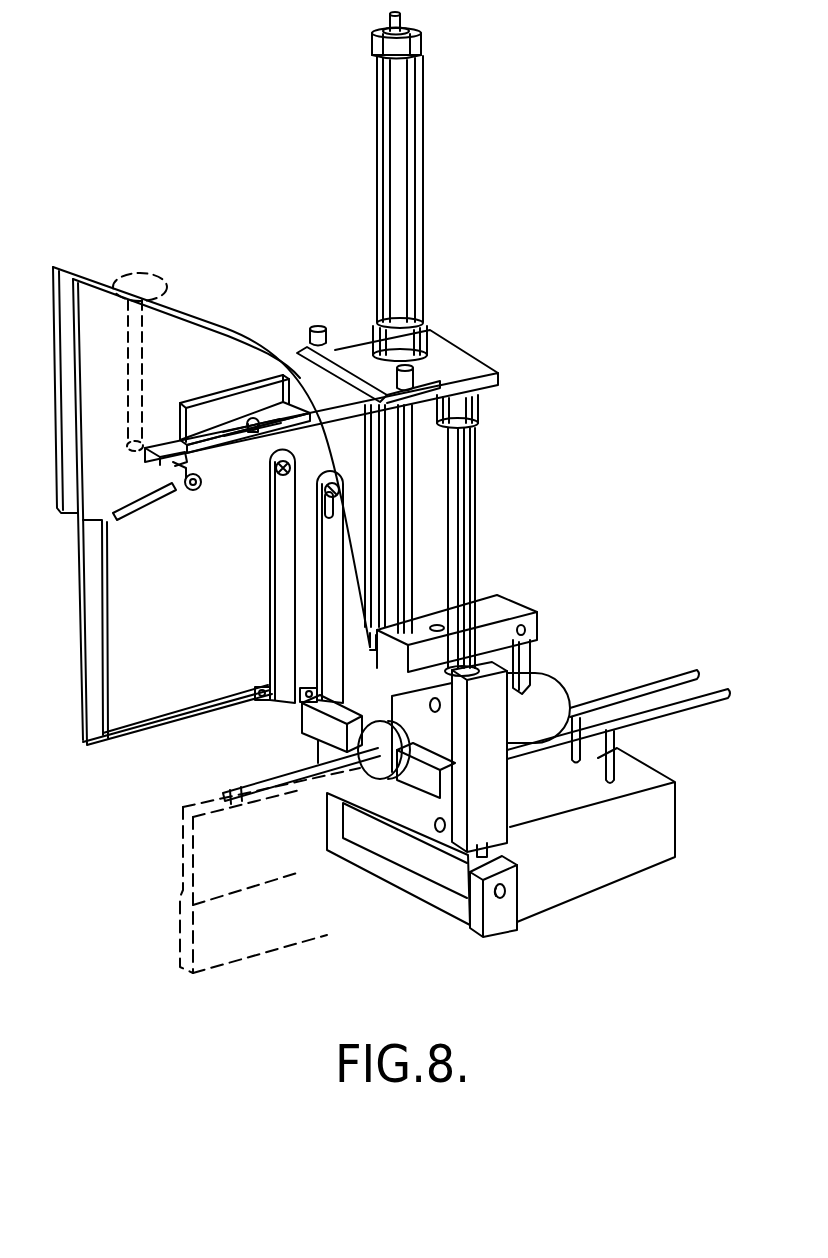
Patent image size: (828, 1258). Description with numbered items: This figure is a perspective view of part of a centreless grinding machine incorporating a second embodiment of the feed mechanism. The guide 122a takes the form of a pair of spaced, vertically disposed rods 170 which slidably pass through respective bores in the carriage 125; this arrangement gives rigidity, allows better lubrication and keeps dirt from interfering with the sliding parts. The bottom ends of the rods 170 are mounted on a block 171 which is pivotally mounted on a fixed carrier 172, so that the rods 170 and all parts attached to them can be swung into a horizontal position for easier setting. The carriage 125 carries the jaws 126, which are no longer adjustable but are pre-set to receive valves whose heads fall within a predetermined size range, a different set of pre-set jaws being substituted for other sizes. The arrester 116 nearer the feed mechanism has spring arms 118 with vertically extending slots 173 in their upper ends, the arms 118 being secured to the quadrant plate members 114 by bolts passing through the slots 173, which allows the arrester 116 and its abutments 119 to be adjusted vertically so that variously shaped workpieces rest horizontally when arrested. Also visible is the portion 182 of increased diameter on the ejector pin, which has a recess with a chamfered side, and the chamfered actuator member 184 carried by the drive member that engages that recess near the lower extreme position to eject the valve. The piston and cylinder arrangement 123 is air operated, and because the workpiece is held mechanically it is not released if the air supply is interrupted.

The quadrant plate members 114 is at (208, 352).
The arrester 116 is at (270, 607).
The spring arms 118 is at (270, 577).
The abutments 119 is at (316, 690).
The guide 122a is at (478, 471).
The piston and cylinder arrangement 123 is at (412, 228).
The carriage 125 is at (490, 788).
The jaws 126 is at (330, 714).
The rods 170 is at (384, 553).
The block 171 is at (413, 858).
The fixed carrier 172 is at (500, 912).
The slots 173 is at (326, 506).
The portion of increased diameter 182 is at (545, 700).
The chamfered actuator member 184 is at (520, 658).